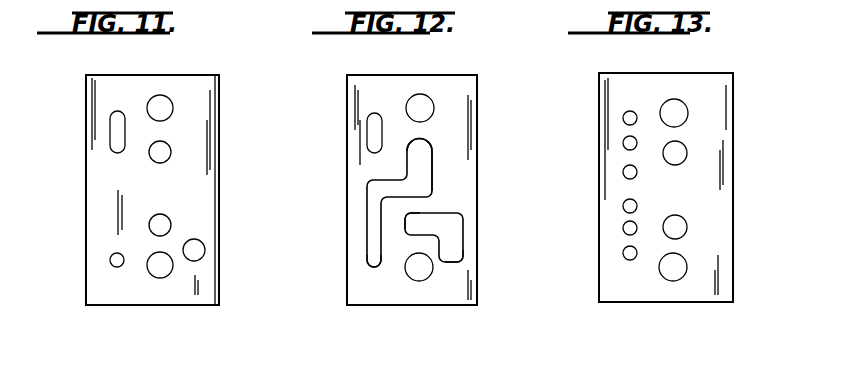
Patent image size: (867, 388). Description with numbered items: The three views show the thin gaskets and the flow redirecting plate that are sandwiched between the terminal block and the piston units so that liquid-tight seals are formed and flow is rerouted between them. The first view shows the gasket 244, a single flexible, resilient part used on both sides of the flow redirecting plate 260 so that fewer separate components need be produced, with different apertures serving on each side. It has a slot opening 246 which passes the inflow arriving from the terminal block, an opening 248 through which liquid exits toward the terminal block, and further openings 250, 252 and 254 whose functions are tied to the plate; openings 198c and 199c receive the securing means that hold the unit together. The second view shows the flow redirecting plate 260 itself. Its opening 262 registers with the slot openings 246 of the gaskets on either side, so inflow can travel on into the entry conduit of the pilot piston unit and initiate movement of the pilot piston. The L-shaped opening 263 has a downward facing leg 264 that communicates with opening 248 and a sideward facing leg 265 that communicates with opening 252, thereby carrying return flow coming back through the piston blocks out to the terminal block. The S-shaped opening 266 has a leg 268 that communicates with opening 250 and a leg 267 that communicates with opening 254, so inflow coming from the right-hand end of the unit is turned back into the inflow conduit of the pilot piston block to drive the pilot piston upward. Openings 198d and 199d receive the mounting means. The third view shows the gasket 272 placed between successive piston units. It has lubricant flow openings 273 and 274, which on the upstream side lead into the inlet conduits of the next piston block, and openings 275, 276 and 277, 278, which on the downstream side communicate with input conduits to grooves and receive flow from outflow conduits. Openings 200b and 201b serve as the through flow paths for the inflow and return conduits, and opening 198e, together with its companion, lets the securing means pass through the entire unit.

In FIG. 11, the gasket 244 is at (85, 99).
In FIG. 11, the opening 198c is at (173, 108).
In FIG. 11, the slot opening 246 is at (110, 137).
In FIG. 11, the opening 250 is at (171, 155).
In FIG. 11, the opening 252 is at (149, 222).
In FIG. 11, the opening 248 is at (205, 250).
In FIG. 11, the opening 254 is at (110, 264).
In FIG. 11, the opening 199c is at (160, 278).
In FIG. 12, the flow redirecting plate 260 is at (479, 96).
In FIG. 12, the opening 198d is at (428, 97).
In FIG. 12, the opening 262 is at (366, 138).
In FIG. 12, the S-shaped opening 266 is at (363, 206).
In FIG. 12, the leg 268 is at (433, 147).
In FIG. 12, the leg 267 is at (375, 265).
In FIG. 12, the L-shaped opening 263 is at (455, 240).
In FIG. 12, the sideward facing leg 265 is at (413, 225).
In FIG. 12, the downward facing leg 264 is at (458, 259).
In FIG. 12, the opening 199d is at (410, 278).
In FIG. 13, the gasket 272 is at (735, 98).
In FIG. 13, the opening 198e is at (682, 101).
In FIG. 13, the opening 200b is at (687, 150).
In FIG. 13, the opening 201b is at (687, 225).
In FIG. 13, the lubricant flow opening 273 is at (622, 120).
In FIG. 13, the lubricant flow opening 277 is at (622, 146).
In FIG. 13, the lubricant flow opening 275 is at (622, 174).
In FIG. 13, the lubricant flow opening 276 is at (622, 208).
In FIG. 13, the lubricant flow opening 278 is at (622, 232).
In FIG. 13, the lubricant flow opening 274 is at (622, 258).